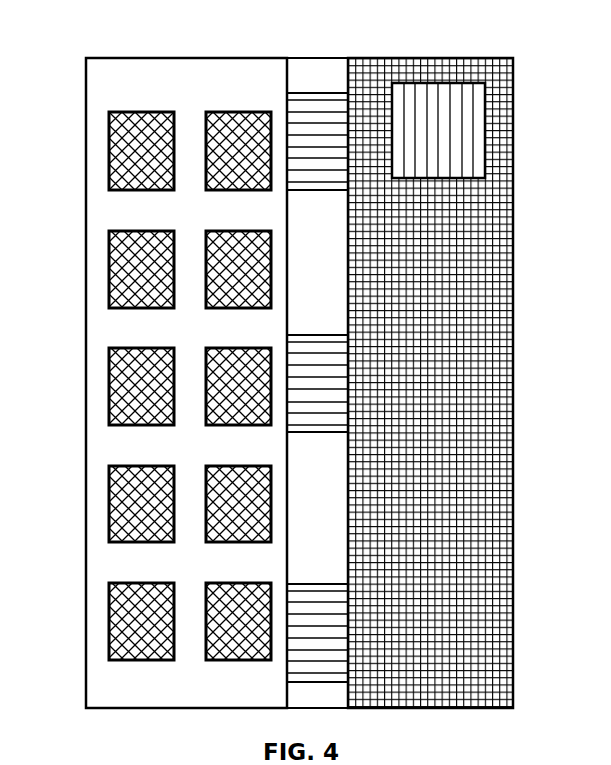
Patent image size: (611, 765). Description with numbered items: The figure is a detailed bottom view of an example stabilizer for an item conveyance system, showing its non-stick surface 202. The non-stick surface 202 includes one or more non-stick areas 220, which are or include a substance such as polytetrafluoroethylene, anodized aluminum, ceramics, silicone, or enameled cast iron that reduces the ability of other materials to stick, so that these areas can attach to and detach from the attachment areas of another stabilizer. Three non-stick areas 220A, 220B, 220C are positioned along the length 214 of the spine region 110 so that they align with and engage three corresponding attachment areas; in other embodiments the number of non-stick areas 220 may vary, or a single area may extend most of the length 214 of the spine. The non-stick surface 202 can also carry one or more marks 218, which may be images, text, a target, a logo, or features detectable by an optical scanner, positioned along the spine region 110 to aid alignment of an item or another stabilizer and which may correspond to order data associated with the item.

The spine region 110 is at (310, 88).
The non-stick surface 202 is at (510, 92).
The length 214 is at (149, 383).
The marks 218 is at (434, 82).
The non-stick areas 220 is at (133, 505).
The first non-stick area 220A is at (352, 185).
The second non-stick area 220B is at (352, 410).
The third non-stick area 220C is at (358, 603).